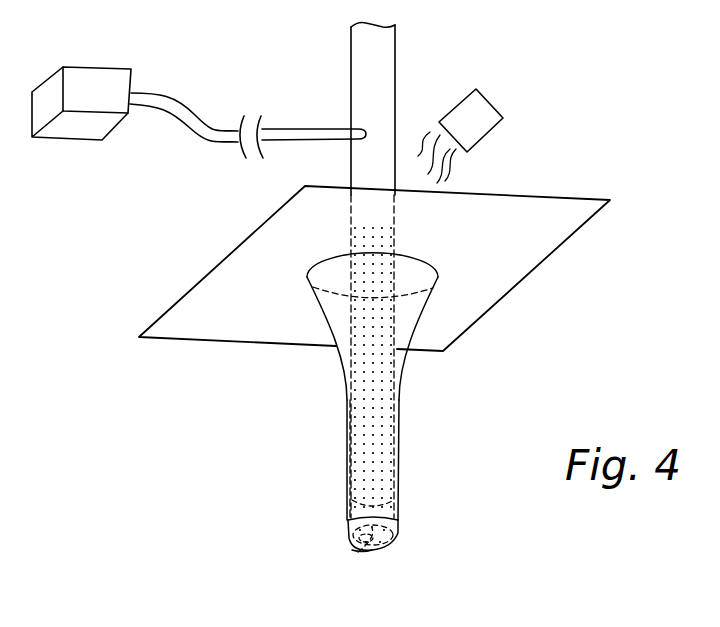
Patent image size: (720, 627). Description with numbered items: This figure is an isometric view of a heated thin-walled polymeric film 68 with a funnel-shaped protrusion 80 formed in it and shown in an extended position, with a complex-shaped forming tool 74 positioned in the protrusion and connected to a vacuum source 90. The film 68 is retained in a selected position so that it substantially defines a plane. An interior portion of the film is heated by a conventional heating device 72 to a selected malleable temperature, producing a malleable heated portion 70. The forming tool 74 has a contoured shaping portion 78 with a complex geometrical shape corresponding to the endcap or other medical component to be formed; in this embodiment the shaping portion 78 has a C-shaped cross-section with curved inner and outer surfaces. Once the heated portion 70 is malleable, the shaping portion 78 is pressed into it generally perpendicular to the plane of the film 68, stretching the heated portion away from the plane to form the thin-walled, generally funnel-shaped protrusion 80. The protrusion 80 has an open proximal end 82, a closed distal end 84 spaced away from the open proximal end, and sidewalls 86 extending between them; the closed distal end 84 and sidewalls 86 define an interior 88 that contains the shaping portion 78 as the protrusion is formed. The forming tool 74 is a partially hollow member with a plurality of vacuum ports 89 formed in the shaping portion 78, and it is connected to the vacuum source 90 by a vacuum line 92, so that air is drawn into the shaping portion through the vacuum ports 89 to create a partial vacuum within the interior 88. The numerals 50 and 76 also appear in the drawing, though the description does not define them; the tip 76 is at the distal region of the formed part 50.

The tubular medical device 50 is at (347, 528).
The polymeric film 68 is at (557, 214).
The heated portion 70 is at (412, 250).
The heating device 72 is at (462, 95).
The forming tool 74 is at (388, 75).
The closed distal tip 76 is at (398, 540).
The shaping portion 78 is at (387, 465).
The protrusion 80 is at (405, 368).
The open proximal end 82 is at (332, 295).
The closed distal end 84 is at (350, 545).
The sidewalls 86 is at (346, 473).
The interior 88 is at (350, 402).
The vacuum ports 89 is at (350, 502).
The vacuum source 90 is at (78, 66).
The vacuum line 92 is at (289, 128).